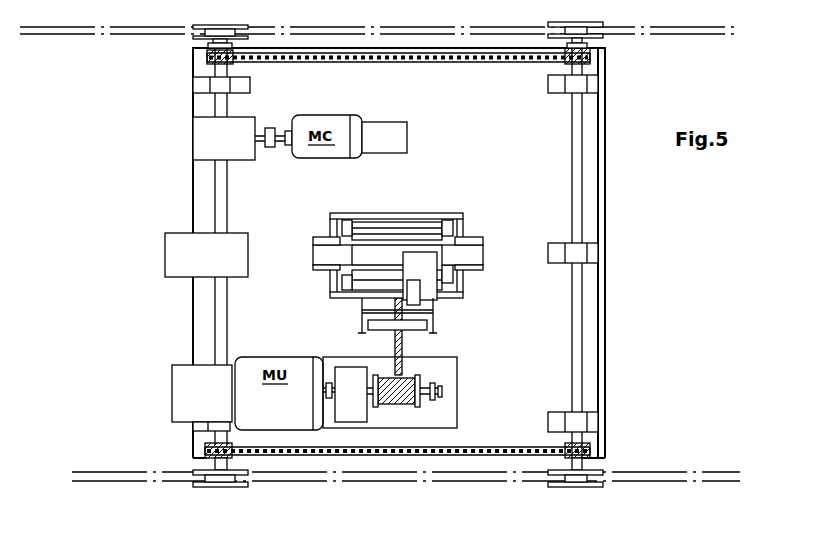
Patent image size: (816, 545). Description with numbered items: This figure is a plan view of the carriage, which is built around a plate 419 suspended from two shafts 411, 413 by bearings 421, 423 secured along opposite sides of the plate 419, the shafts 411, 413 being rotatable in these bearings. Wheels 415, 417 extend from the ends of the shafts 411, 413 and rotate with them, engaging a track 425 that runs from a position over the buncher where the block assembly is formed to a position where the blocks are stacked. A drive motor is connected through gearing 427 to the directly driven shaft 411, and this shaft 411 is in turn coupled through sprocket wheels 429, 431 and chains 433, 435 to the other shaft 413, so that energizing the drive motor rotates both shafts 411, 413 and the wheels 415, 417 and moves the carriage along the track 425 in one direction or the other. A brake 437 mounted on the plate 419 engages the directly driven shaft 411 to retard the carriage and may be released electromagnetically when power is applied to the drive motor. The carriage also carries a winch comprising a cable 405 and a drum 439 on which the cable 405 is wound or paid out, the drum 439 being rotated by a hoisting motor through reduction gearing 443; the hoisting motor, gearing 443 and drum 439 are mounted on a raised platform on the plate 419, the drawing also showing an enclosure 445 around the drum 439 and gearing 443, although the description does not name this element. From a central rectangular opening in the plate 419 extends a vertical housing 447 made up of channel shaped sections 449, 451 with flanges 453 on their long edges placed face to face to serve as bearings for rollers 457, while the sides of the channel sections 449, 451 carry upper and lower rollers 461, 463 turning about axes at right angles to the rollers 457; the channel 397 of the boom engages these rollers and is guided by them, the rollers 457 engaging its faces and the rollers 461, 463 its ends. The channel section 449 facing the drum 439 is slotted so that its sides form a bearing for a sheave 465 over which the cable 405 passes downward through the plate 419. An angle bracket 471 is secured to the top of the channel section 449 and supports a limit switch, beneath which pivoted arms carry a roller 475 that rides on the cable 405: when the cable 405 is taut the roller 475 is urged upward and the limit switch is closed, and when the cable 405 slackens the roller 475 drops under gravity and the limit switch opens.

The channel 397 is at (463, 241).
The cable 405 is at (401, 343).
The shaft 411 is at (222, 303).
The shaft 413 is at (577, 307).
The wheels 415 is at (222, 26).
The wheels 417 is at (583, 31).
The plate 419 is at (461, 105).
The bearings 421 is at (600, 86).
The bearings 423 is at (197, 88).
The track 425 is at (690, 30).
The gearing 427 is at (203, 136).
The sprocket wheels 429 is at (207, 57).
The sprocket wheels 431 is at (208, 446).
The chains 433 is at (478, 448).
The chains 435 is at (462, 59).
The brake 437 is at (185, 237).
The drum 439 is at (418, 378).
The reduction gearing 443 is at (365, 358).
The drive housing 445 is at (450, 421).
The vertical housing 447 is at (404, 262).
The channel shaped section 449 is at (340, 297).
The channel shaped section 451 is at (338, 220).
The flanges 453 is at (325, 271).
The rollers 457 is at (478, 252).
The upper rollers 461 is at (349, 225).
The lower rollers 463 is at (447, 225).
The sheave 465 is at (401, 272).
The angle bracket 471 is at (437, 300).
The roller 475 is at (428, 322).